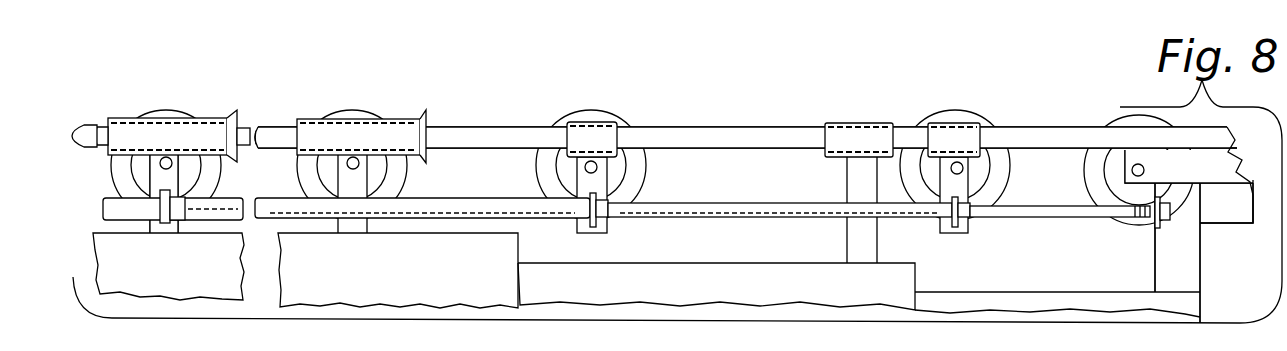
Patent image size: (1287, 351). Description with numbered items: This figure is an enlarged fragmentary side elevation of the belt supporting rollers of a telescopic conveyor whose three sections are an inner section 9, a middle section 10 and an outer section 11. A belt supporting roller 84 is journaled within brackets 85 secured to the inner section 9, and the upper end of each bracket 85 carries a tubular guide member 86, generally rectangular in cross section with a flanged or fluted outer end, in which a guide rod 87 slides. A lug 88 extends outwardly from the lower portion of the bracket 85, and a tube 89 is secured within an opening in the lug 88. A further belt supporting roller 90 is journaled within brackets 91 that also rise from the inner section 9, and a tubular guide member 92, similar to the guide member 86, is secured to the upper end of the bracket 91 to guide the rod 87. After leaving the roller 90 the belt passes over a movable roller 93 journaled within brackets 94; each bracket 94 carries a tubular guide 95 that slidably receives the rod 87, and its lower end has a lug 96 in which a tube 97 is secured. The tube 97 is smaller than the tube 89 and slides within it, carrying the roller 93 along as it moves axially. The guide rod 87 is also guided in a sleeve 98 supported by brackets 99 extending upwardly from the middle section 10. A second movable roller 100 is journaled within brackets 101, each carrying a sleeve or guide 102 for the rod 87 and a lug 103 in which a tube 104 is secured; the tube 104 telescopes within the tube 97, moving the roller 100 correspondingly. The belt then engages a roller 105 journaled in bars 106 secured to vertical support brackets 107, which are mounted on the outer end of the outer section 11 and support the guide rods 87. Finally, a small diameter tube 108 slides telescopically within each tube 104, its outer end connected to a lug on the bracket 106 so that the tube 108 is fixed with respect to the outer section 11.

The inner section 9 is at (403, 293).
The middle section 10 is at (709, 293).
The outer section 11 is at (1063, 310).
The belt supporting roller 84 is at (190, 78).
The bracket 85 is at (158, 173).
The tubular guide member 86 is at (124, 93).
The guide rod 87 is at (497, 127).
The lug 88 is at (165, 228).
The tube 89 is at (110, 211).
The belt supporting roller 90 is at (386, 96).
The bracket 91 is at (360, 185).
The tubular guide member 92 is at (300, 118).
The movable roller 93 is at (611, 96).
The bracket 94 is at (600, 181).
The tubular guide 95 is at (606, 122).
The lug 96 is at (600, 228).
The tube 97 is at (540, 218).
The sleeve 98 is at (856, 123).
The bracket 99 is at (850, 185).
The second movable roller 100 is at (966, 118).
The bracket 101 is at (963, 186).
The sleeve or guide 102 is at (944, 104).
The lug 103 is at (960, 228).
The tube 104 is at (815, 216).
The roller 105 is at (1160, 124).
The bar 106 is at (1240, 157).
The vertical support bracket 107 is at (1185, 258).
The small diameter tube 108 is at (1100, 214).